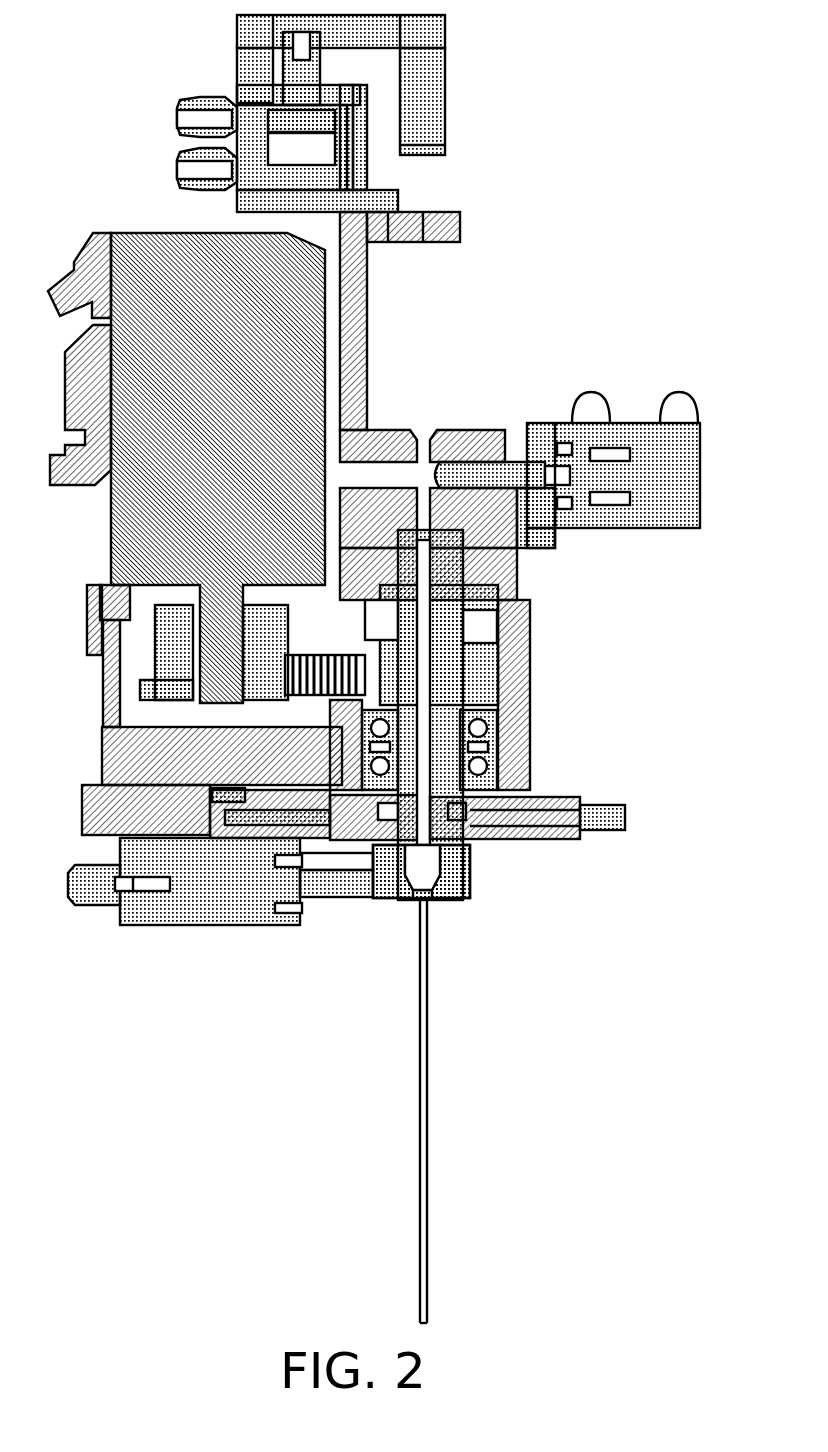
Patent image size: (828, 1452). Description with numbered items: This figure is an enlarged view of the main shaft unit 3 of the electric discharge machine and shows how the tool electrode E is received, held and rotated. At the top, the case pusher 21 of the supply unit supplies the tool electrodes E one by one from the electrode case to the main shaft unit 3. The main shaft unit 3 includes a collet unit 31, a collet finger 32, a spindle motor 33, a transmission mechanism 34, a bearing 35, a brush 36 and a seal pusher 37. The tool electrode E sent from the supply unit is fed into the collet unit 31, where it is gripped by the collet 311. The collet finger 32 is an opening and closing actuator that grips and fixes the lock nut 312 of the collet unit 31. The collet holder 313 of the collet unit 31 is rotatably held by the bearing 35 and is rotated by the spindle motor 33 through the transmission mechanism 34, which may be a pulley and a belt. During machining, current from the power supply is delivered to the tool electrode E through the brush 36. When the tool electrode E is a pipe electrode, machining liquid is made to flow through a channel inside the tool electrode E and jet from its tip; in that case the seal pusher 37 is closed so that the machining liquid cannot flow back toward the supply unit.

The main shaft unit 3 is at (633, 240).
The case pusher 21 is at (246, 98).
The spindle motor 33 is at (158, 243).
The seal pusher 37 is at (455, 442).
The transmission mechanism 34 is at (467, 662).
The collet holder 313 is at (440, 686).
The bearing 35 is at (484, 724).
The brush 36 is at (515, 826).
The collet unit 31 is at (486, 878).
The collet 311 is at (440, 880).
The lock nut 312 is at (382, 898).
The collet finger 32 is at (230, 917).
The tool electrode E is at (420, 1110).